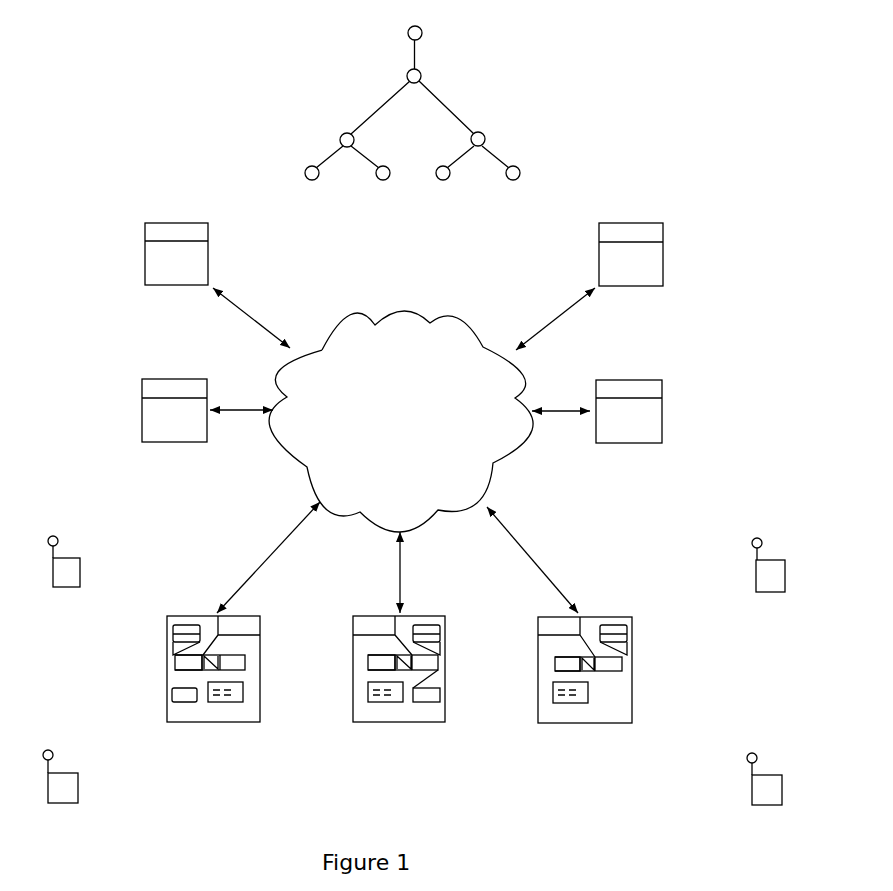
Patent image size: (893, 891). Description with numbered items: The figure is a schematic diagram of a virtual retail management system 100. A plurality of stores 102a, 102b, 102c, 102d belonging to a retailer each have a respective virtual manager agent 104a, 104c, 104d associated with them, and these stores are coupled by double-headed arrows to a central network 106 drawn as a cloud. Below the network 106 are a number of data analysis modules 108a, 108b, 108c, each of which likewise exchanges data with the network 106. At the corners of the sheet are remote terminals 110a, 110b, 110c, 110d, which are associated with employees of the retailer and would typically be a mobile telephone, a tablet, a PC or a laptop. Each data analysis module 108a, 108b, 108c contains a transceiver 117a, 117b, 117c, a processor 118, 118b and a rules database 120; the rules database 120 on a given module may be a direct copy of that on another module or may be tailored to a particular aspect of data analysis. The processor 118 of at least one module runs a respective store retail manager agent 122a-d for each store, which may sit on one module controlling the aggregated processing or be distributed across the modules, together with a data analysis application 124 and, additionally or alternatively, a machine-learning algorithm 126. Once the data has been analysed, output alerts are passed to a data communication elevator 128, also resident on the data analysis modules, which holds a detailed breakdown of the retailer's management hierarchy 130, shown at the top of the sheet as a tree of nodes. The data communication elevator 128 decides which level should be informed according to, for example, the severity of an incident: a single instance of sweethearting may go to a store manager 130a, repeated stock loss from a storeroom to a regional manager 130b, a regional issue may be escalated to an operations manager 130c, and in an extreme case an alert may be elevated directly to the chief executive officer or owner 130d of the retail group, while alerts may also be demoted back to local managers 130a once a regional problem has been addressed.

The virtual retail management system 100 is at (348, 280).
The store 102a is at (157, 262).
The store 102b is at (157, 423).
The store 102c is at (645, 268).
The store 102d is at (647, 427).
The virtual manager agent 104a is at (192, 228).
The virtual manager agent 104c is at (643, 228).
The virtual manager agent 104d is at (647, 390).
The network 106 is at (405, 355).
The data analysis module 108a is at (180, 723).
The data analysis module 108b is at (380, 718).
The data analysis module 108c is at (560, 723).
The remote terminal 110a is at (70, 575).
The remote terminal 110b is at (770, 583).
The remote terminal 110c is at (767, 797).
The remote terminal 110d is at (58, 795).
The transceiver 117a is at (242, 623).
The transceiver 117b is at (372, 618).
The transceiver 117c is at (547, 625).
The processor 118 is at (178, 665).
The processor 118b is at (622, 668).
The rules database 120 is at (246, 694).
The store retail manager agent 122a-d is at (442, 697).
The data analysis application 124 is at (172, 630).
The machine-learning algorithm 126 is at (246, 662).
The data communication elevator 128 is at (194, 700).
The management hierarchy 130 is at (465, 88).
The store manager 130a is at (521, 172).
The regional manager 130b is at (486, 135).
The operations manager 130c is at (406, 75).
The chief executive officer 130d is at (406, 31).